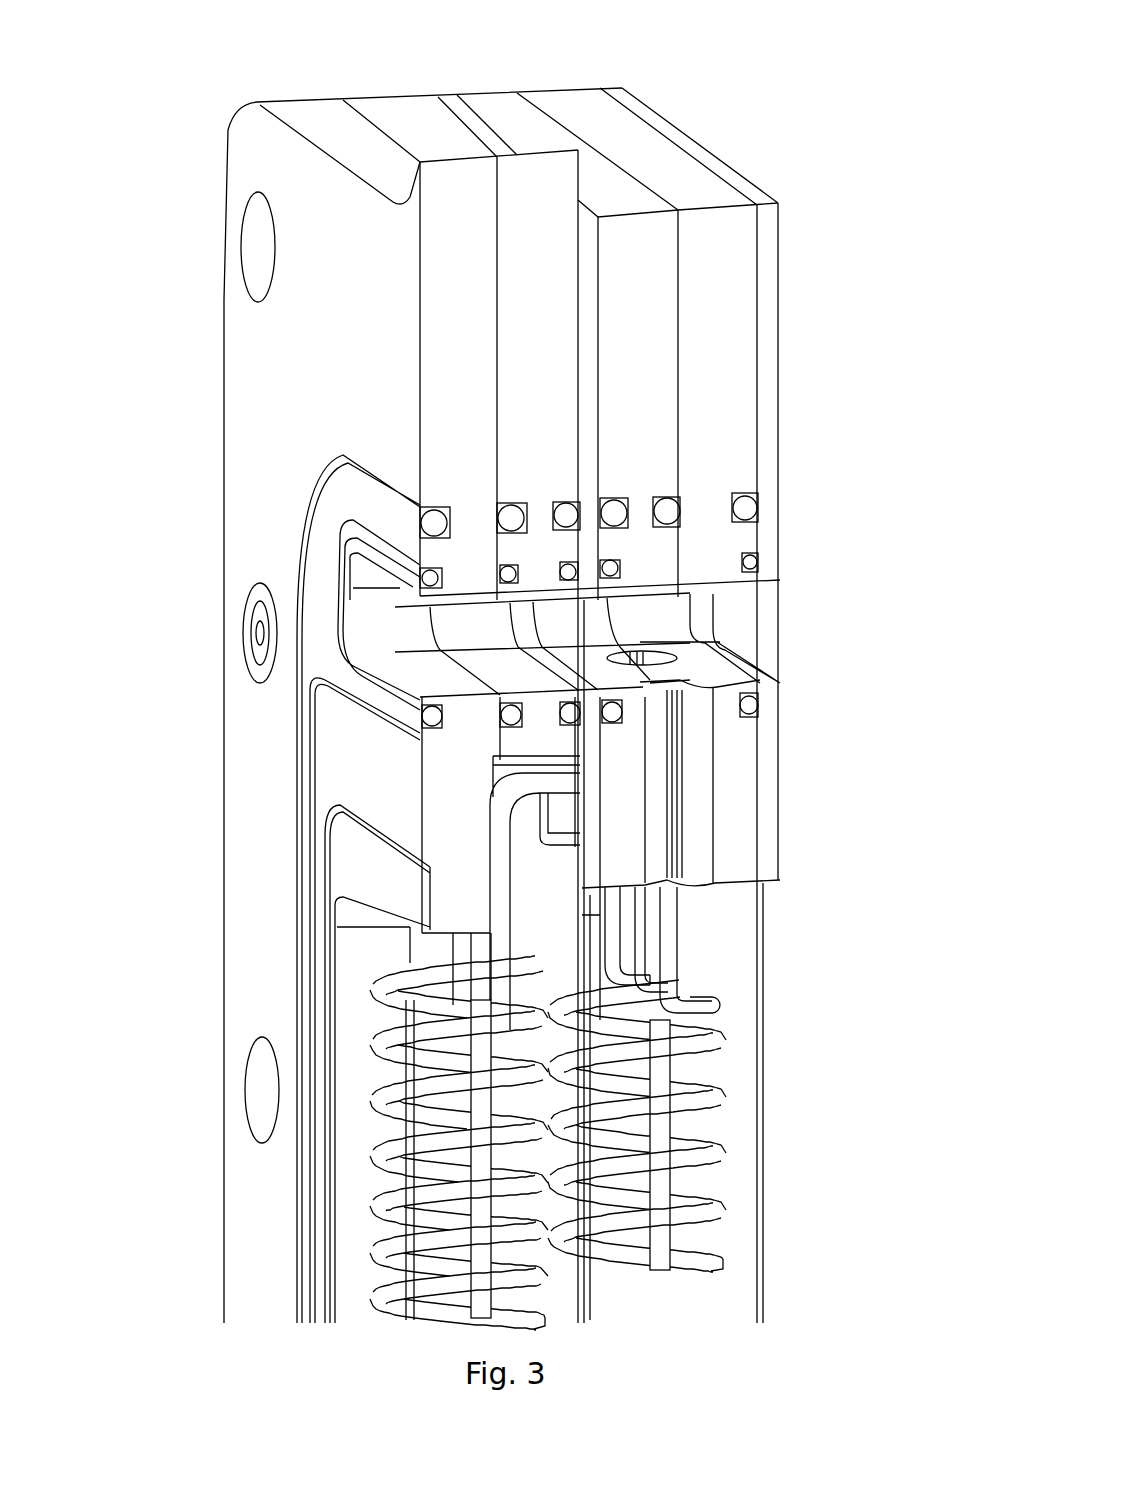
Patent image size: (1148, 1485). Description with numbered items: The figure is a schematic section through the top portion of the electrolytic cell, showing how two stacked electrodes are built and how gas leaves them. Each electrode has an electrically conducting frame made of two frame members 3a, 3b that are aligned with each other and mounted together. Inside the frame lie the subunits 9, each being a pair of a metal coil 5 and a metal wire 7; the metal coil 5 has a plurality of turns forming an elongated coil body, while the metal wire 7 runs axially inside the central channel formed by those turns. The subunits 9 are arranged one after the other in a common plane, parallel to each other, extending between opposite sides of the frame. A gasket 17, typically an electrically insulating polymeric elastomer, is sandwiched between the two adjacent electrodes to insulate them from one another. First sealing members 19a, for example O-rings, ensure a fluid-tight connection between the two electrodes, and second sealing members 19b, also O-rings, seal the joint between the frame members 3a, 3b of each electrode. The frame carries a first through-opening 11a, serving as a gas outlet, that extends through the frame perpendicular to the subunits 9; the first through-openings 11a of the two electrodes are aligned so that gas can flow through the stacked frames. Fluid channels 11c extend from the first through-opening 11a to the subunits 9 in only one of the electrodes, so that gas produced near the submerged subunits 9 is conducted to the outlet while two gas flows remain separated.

The frame member 3a is at (440, 178).
The frame member 3b is at (535, 180).
The gasket 17 is at (583, 287).
The first sealing member 19a is at (377, 487).
The second sealing member 19b is at (510, 518).
The first through-opening 11a is at (387, 640).
The fluid channel 11c is at (657, 652).
The metal coil 5 is at (445, 1030).
The metal wire 7 is at (470, 960).
The subunit 9 is at (358, 1222).